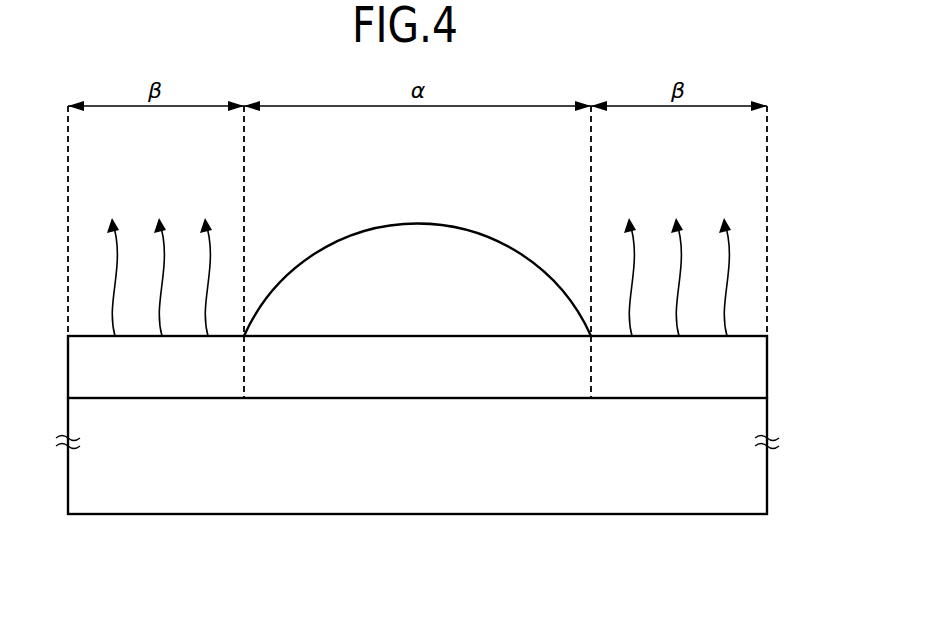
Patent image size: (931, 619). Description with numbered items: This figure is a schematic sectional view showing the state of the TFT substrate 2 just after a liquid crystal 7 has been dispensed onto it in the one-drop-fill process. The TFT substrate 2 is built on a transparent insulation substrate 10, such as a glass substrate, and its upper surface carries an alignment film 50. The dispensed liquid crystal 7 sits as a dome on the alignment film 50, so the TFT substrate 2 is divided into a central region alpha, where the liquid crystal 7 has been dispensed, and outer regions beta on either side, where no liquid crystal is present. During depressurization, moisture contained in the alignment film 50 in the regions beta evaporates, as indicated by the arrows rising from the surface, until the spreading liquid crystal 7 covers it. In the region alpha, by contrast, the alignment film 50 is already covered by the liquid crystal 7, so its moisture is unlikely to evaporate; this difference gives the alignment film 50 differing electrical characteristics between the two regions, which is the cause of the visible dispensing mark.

The TFT substrate 2 is at (532, 528).
The liquid crystal 7 is at (452, 226).
The transparent insulation substrate 10 is at (753, 479).
The alignment film 50 is at (753, 371).